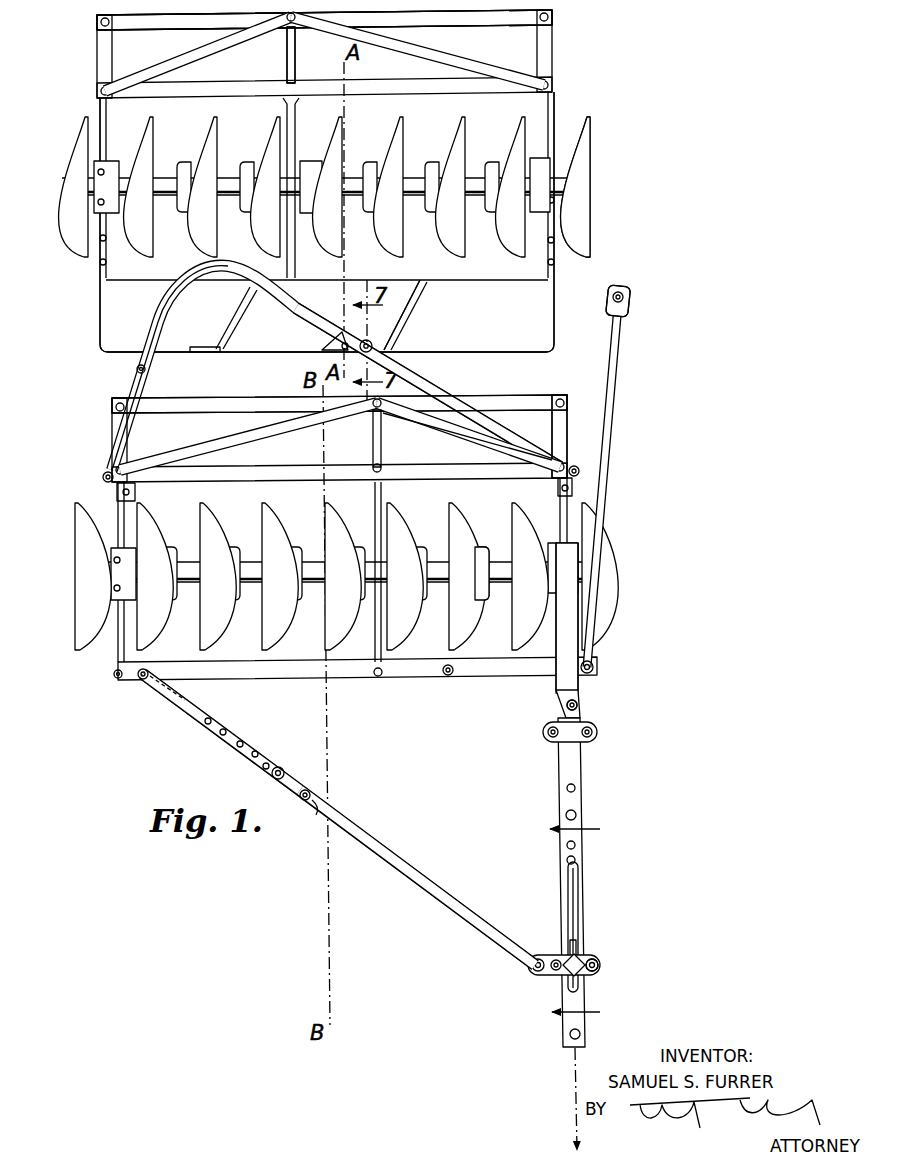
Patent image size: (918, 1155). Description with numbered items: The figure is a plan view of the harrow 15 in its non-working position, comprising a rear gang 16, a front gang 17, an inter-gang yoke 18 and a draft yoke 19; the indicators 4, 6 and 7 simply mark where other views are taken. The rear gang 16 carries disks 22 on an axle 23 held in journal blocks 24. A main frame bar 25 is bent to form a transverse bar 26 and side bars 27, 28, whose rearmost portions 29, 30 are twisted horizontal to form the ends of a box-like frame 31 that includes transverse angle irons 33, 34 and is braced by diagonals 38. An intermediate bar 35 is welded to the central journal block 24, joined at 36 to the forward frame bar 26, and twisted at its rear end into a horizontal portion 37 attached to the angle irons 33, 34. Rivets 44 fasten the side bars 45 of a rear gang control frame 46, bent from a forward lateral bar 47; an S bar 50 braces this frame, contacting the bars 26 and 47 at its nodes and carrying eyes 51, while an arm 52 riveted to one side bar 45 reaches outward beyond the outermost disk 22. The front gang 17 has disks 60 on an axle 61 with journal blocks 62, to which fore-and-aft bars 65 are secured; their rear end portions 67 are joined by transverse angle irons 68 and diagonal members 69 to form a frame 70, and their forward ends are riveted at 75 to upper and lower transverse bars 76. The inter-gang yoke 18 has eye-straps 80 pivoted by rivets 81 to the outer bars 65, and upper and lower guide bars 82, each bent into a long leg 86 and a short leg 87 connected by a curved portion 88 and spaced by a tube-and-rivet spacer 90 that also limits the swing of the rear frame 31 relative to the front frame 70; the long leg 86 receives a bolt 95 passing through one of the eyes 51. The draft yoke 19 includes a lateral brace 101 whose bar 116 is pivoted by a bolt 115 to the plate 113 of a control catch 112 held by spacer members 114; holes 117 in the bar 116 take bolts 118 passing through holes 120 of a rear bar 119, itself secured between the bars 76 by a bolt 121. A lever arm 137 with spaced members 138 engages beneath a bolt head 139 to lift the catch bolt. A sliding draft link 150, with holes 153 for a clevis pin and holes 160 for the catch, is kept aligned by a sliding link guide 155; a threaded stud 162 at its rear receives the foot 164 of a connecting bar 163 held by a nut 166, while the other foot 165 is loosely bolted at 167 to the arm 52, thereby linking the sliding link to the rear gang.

The rear disc gang unit 4 is at (712, 490).
The section line 6- 6 is at (579, 908).
The pivot pin / section line 7- 7 is at (366, 346).
The harrow 15 is at (683, 168).
The rear gang 16 is at (600, 130).
The front gang 17 is at (612, 604).
The inter-gang yoke 18 is at (130, 386).
The draft yoke 19 is at (580, 768).
The disks 22 is at (400, 148).
The axle 23 is at (475, 178).
The journal blocks 24 is at (110, 166).
The main frame bar 25 is at (560, 213).
The transverse bar 26 is at (470, 292).
The side bar 27 is at (565, 236).
The side bar 28 is at (100, 232).
The rearmost portion of side bar 29 is at (545, 40).
The rearmost portion of side bar 30 is at (102, 52).
The rectangular box-like frame 31 is at (96, 40).
The transverse angle iron 33 is at (262, 68).
The transverse angle iron 34 is at (175, 22).
The intermediate bar 35 is at (286, 108).
The forward end connection 36 is at (275, 248).
The horizontal portion 37 is at (292, 72).
The diagonals 38 is at (228, 55).
The rivets 44 is at (548, 262).
The side bars 45 is at (101, 312).
The rear gang control frame 46 is at (558, 277).
The forward lateral bar 47 is at (410, 348).
The S bar 50 is at (236, 312).
The eyes 51 is at (340, 352).
The arm 52 is at (620, 315).
The disks 60 is at (462, 612).
The axle 61 is at (480, 560).
The journal blocks 62 is at (165, 595).
The fore and aft bars 65 is at (115, 620).
The rear end portions 67 is at (118, 448).
The transverse angle irons 68 is at (520, 392).
The diagonal members 69 is at (428, 424).
The frame 70 is at (570, 433).
The rivets 75 is at (116, 680).
The forward transverse bars 76 is at (392, 680).
The eye-straps 80 is at (103, 480).
The rivets 81 is at (130, 505).
The guide bars 82 is at (200, 306).
The long leg 86 is at (440, 385).
The short leg 87 is at (168, 298).
The curved portion 88 is at (205, 262).
The tube-and-rivet spacer element 90 is at (134, 370).
The bolt 95 is at (404, 330).
The lateral brace 101 is at (420, 908).
The control catch 112 is at (578, 862).
The plate 113 is at (597, 972).
The tube and bolt spacer members 114 is at (598, 962).
The pivot bolt 115 is at (532, 972).
The bar 116 is at (385, 850).
The holes 117 is at (291, 784).
The bolts 118 is at (285, 770).
The rear bar 119 is at (205, 710).
The holes 120 is at (252, 745).
The bolt 121 is at (142, 682).
The lever arm 137 is at (578, 875).
The spaced members 138 is at (578, 890).
The head 139 is at (580, 958).
The sliding draft link 150 is at (578, 790).
The holes 153 is at (580, 1032).
The sliding link guide 155 is at (600, 732).
The holes 160 is at (566, 790).
The threaded stud 162 is at (580, 702).
The connecting bar 163 is at (580, 652).
The foot 164 is at (572, 692).
The foot 165 is at (626, 320).
The nut 166 is at (580, 707).
The bolt 167 is at (630, 300).